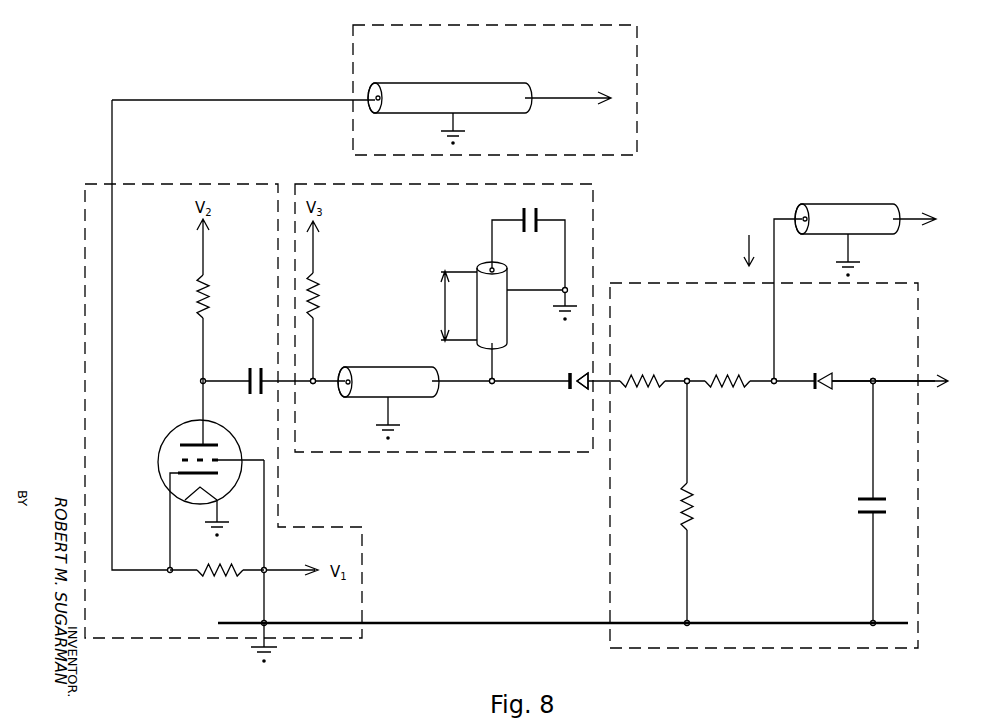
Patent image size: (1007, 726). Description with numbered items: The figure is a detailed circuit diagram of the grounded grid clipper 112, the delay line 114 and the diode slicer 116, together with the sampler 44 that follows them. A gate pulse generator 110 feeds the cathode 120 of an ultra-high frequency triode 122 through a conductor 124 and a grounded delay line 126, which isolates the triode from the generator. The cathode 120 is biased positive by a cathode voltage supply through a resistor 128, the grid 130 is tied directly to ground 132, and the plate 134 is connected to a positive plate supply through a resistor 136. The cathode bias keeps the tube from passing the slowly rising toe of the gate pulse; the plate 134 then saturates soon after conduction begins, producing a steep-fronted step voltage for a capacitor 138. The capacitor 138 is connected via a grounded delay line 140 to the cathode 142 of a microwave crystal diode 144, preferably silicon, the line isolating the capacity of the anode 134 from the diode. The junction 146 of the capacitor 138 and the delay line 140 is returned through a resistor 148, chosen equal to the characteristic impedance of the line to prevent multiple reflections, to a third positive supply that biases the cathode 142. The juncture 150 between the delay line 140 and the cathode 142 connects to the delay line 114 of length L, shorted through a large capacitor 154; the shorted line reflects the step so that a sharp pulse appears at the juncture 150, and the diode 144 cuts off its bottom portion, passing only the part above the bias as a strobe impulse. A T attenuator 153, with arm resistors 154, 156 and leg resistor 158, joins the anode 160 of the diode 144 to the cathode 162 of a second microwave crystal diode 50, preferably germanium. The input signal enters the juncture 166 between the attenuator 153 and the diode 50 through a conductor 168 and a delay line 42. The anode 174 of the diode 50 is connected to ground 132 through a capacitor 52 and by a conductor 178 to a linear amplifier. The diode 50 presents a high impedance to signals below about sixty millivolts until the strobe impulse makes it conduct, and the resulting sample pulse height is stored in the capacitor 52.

The gate pulse generator 110 is at (639, 96).
The grounded delay line 126 is at (462, 84).
The conductor 124 is at (550, 97).
The grounded grid clipper 112 is at (76, 356).
The resistor 136 is at (196, 296).
The capacitor 138 is at (254, 365).
The ultra-high frequency triode 122 is at (172, 424).
The plate 134 is at (212, 443).
The grid 130 is at (266, 492).
The cathode 120 is at (166, 478).
The resistor 128 is at (216, 583).
The ground 132 is at (439, 634).
The diode slicer 116 is at (454, 463).
The resistor 148 is at (325, 285).
The grounded delay line 140 is at (394, 366).
The junction 146 is at (312, 400).
The juncture 150 is at (486, 393).
The delay line 114 is at (512, 316).
The large capacitor; resistor 154 is at (528, 192).
The microwave crystal diode 144 is at (567, 371).
The cathode 142 is at (568, 392).
The anode 160 is at (584, 393).
The output circuit 44 is at (792, 658).
The resistor 156 is at (728, 370).
The T attenuator 153 is at (725, 411).
The juncture 166 is at (778, 393).
The microwave crystal diode 50 is at (830, 368).
The anode 174 is at (832, 390).
The cathode 162 is at (818, 396).
The conductor 178 is at (930, 375).
The delay line 42 is at (858, 203).
The conductor 168 is at (906, 215).
The resistor 158 is at (698, 507).
The capacitor 52 is at (855, 508).